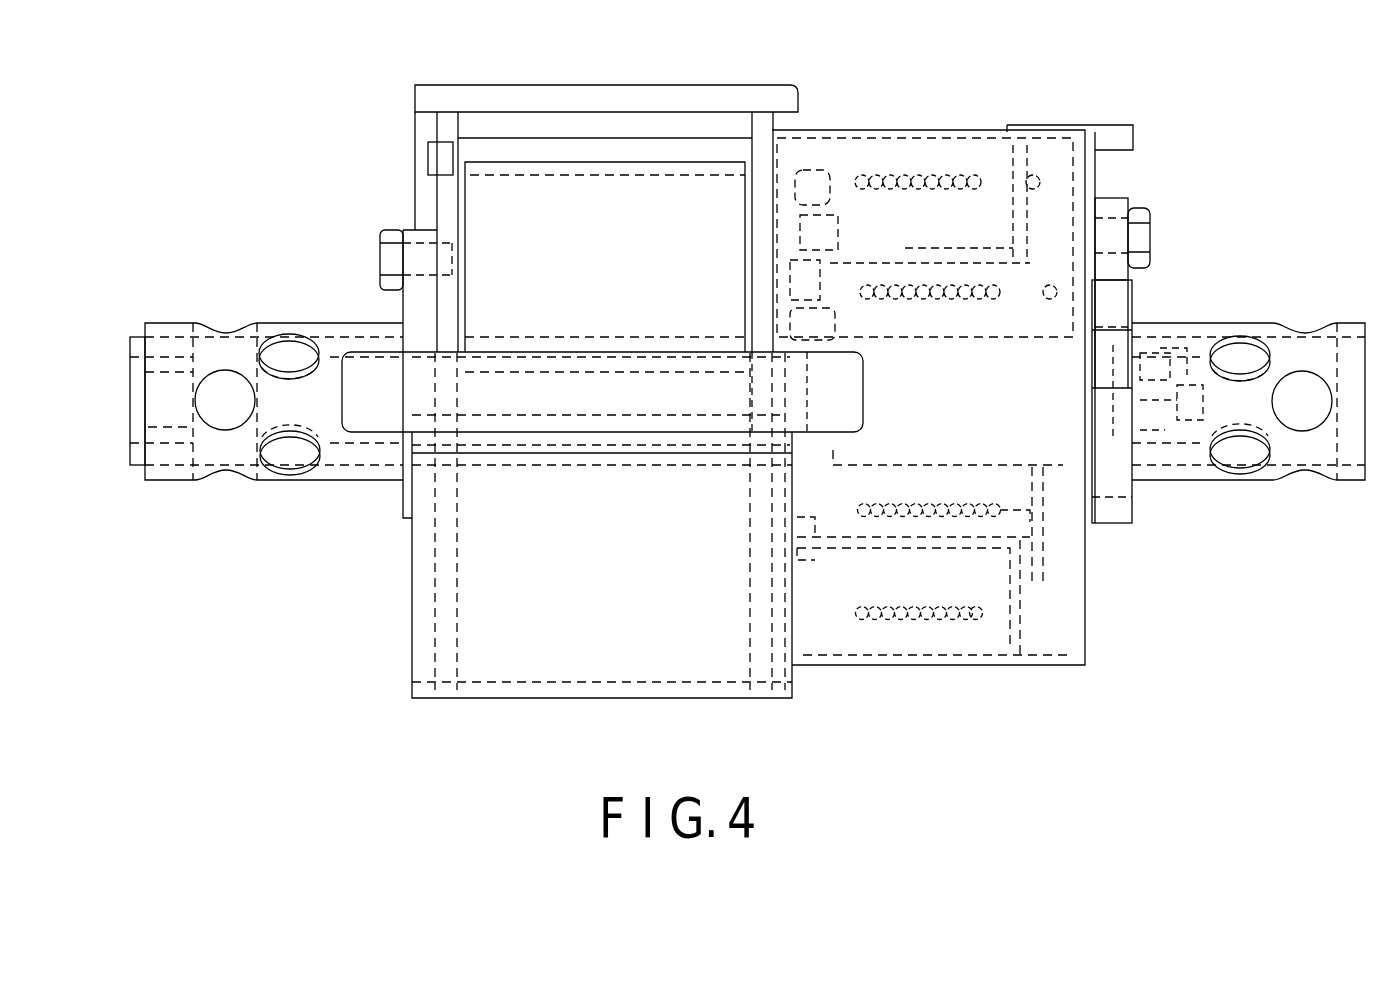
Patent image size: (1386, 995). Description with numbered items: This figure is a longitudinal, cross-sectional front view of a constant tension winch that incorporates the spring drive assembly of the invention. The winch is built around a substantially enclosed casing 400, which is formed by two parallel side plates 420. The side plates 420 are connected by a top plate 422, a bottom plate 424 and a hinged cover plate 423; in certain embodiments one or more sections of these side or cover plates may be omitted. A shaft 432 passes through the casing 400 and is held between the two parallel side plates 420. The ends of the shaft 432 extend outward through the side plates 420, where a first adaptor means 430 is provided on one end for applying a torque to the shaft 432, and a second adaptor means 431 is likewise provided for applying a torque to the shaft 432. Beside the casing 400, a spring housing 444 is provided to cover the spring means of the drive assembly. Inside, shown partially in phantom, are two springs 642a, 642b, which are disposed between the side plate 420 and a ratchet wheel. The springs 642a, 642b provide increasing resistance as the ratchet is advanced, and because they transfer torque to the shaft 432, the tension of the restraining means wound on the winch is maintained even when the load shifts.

The casing 400 is at (502, 95).
The side plates 420 is at (763, 130).
The top plate 422 is at (696, 93).
The hinged cover plate 423 is at (557, 198).
The bottom plate 424 is at (660, 699).
The first adaptor means 430 is at (170, 324).
The second adaptor means 431 is at (1352, 320).
The shaft 432 is at (628, 337).
The spring housing 444 is at (917, 130).
The spring 642a is at (1030, 512).
The spring 642b is at (960, 618).